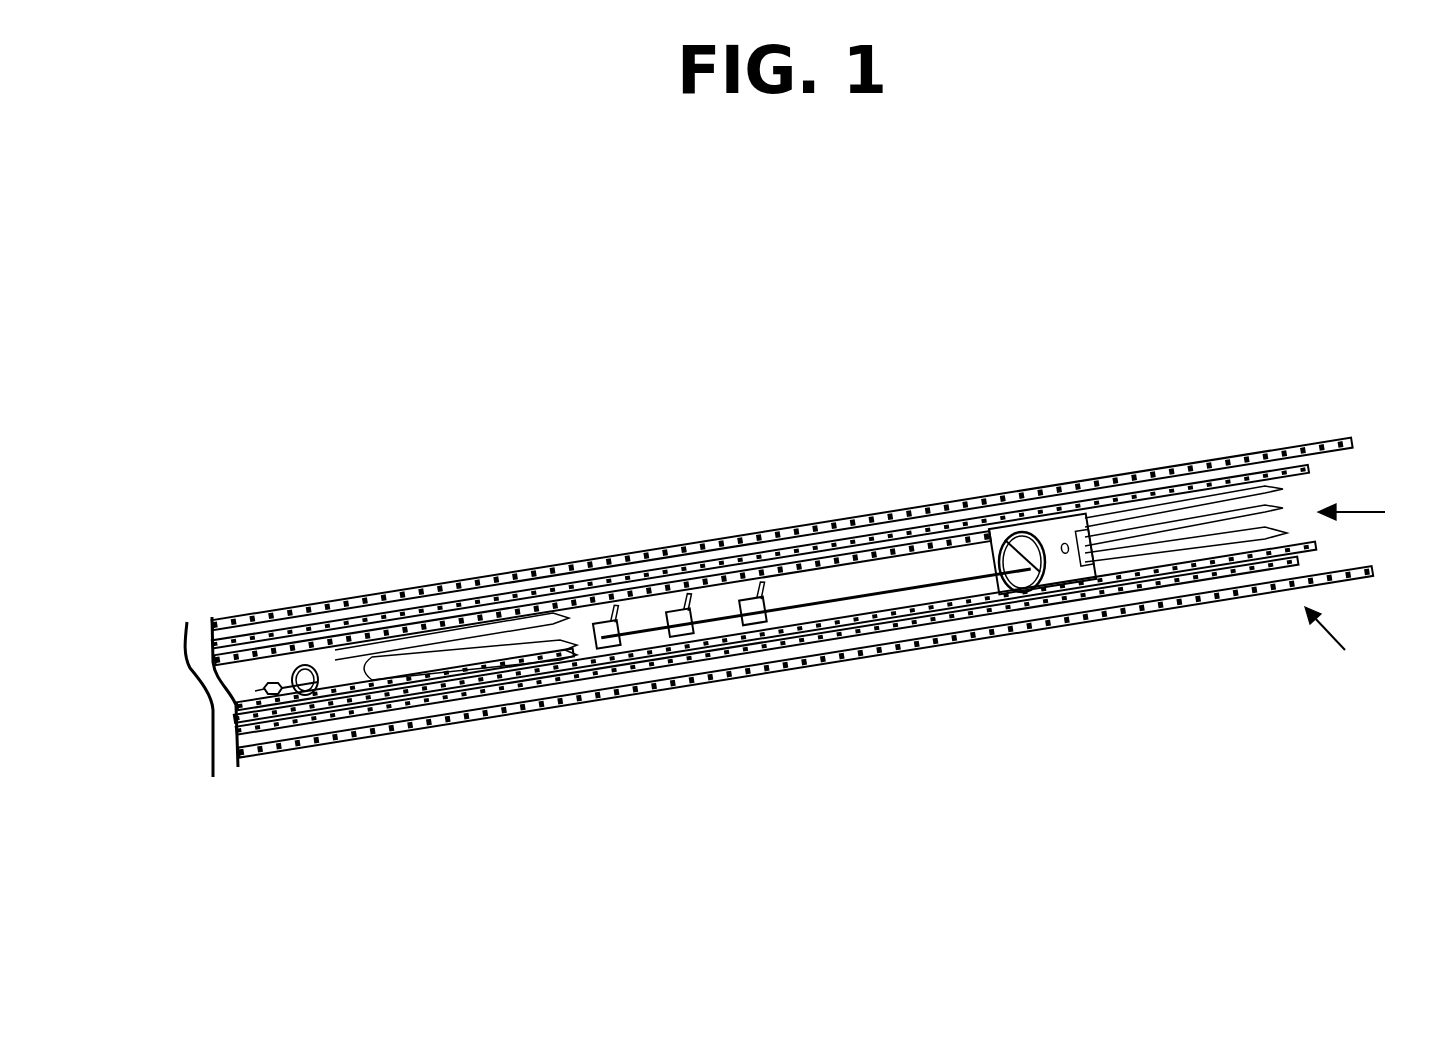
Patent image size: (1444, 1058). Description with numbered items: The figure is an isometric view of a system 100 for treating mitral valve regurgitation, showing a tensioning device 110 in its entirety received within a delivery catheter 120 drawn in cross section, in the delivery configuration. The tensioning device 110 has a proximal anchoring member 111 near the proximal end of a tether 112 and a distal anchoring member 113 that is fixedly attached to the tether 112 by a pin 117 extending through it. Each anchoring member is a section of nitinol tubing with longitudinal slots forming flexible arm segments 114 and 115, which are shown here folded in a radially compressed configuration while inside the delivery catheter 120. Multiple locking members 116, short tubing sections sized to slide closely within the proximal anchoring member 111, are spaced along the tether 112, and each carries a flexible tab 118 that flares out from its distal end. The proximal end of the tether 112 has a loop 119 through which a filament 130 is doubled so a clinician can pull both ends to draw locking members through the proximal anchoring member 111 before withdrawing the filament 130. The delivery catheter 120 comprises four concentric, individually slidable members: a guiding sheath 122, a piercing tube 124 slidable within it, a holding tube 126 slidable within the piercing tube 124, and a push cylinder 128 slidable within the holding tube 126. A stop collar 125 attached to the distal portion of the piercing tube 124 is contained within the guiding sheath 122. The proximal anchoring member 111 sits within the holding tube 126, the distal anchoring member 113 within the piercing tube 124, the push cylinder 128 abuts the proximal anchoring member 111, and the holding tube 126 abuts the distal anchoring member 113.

The system 100 is at (147, 192).
The tensioning device 110 is at (1380, 505).
The proximal anchoring member 111 is at (333, 668).
The tether 112 is at (803, 608).
The distal anchoring member 113 is at (1057, 537).
The flexible arm segments 114 is at (440, 640).
The flexible arm segments 115 is at (1160, 515).
The locking members 116 is at (600, 628).
The pin 117 is at (958, 537).
The flexible tab 118 is at (608, 620).
The loop 119 is at (268, 682).
The delivery catheter 120 is at (1345, 652).
The guiding sheath 122 is at (853, 655).
The piercing tube 124 is at (653, 660).
The stop collar 125 is at (1040, 600).
The holding tube 126 is at (468, 690).
The push cylinder 128 is at (283, 696).
The filament 130 is at (264, 695).